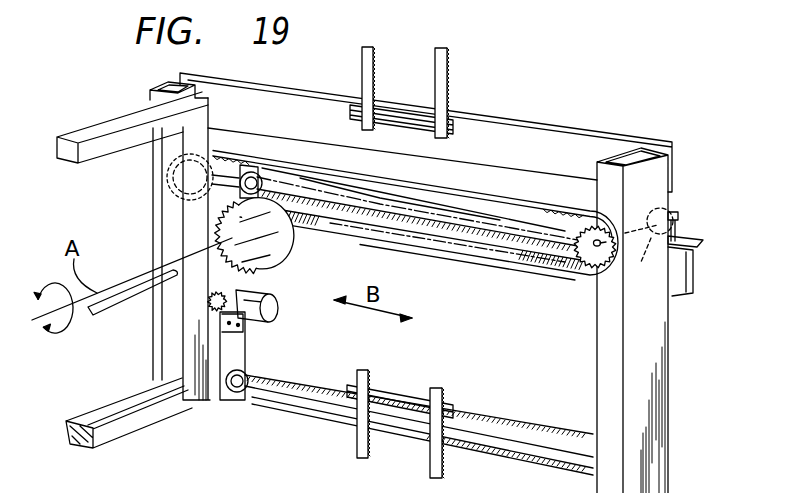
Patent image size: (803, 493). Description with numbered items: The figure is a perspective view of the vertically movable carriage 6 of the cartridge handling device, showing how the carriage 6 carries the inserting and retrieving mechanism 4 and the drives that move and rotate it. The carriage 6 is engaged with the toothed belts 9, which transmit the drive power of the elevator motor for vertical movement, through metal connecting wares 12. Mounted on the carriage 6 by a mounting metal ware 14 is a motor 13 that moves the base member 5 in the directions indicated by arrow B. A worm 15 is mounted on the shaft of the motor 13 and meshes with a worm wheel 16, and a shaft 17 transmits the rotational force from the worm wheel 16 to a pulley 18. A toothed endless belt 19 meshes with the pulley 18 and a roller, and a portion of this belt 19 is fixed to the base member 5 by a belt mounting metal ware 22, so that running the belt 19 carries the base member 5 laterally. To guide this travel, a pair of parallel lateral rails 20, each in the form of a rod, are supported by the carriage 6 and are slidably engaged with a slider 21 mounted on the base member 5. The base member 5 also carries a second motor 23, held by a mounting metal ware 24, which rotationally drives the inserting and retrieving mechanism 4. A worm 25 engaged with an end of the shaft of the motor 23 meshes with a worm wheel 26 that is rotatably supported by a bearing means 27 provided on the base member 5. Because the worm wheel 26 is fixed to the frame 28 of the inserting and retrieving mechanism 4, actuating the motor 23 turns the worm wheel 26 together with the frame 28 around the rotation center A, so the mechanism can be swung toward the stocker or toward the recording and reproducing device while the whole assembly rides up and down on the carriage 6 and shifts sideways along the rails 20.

The inserting and retrieving mechanism 4 is at (95, 128).
The frame 28 is at (104, 154).
The toothed belts 9 is at (375, 63).
The metal connecting wares 12 is at (407, 392).
The belt mounting metal ware 22 is at (303, 198).
The slider 21 is at (243, 172).
The lateral rails 20 is at (443, 222).
The bearing means 27 is at (284, 242).
The worm wheel 26 is at (245, 280).
The motor 23 is at (280, 310).
The mounting metal ware 24 is at (243, 327).
The base member 5 is at (246, 346).
The worm 25 is at (213, 316).
The pulley 18 is at (593, 268).
The toothed endless belt 19 is at (503, 264).
The worm wheel 16 is at (671, 208).
The worm 15 is at (678, 217).
The mounting metal ware 14 is at (702, 240).
The motor 13 is at (694, 270).
The shaft 17 is at (644, 261).
The carriage 6 is at (666, 408).